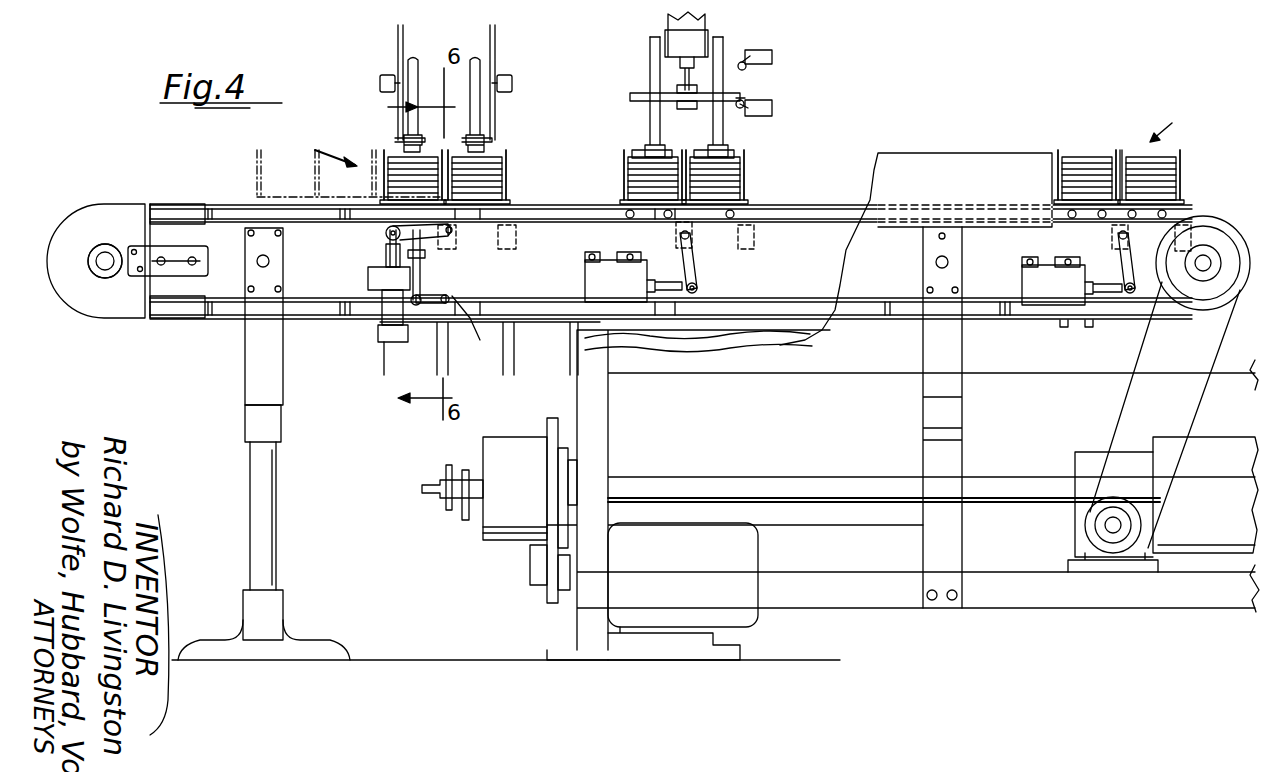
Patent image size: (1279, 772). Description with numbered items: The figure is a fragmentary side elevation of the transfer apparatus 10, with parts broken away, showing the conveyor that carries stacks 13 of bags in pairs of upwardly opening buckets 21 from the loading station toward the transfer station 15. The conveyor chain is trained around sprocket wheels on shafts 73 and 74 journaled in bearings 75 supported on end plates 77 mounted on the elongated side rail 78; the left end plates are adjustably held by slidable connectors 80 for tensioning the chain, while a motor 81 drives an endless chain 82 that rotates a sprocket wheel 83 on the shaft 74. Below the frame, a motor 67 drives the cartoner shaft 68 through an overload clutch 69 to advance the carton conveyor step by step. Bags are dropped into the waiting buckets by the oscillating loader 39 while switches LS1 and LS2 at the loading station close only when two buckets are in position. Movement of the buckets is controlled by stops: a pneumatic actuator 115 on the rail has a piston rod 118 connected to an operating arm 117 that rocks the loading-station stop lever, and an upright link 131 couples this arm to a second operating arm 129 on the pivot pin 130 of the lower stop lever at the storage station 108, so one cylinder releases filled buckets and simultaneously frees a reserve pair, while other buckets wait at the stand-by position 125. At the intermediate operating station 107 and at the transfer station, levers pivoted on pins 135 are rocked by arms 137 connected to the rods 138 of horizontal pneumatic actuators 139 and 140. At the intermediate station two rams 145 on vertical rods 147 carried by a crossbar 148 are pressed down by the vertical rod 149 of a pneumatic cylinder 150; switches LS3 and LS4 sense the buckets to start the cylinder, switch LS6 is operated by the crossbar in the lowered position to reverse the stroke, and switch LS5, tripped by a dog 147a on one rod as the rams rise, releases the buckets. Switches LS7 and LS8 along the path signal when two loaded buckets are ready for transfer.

The transfer apparatus 10 is at (321, 151).
The stacks 13 is at (630, 186).
The transfer station 15 is at (1172, 127).
The buckets 21 is at (612, 166).
The oscillating loader 39 is at (390, 72).
The motor 67 is at (745, 548).
The cartoner shaft 68 is at (800, 495).
The overload clutch 69 is at (505, 533).
The shaft 73 is at (105, 261).
The shaft 74 is at (1200, 272).
The bearings 75 is at (110, 278).
The end plates 77 is at (118, 322).
The side rail 78 is at (195, 290).
The slidable connectors 80 is at (185, 250).
The motor 81 is at (1232, 440).
The endless chain 82 is at (1195, 398).
The sprocket wheel 83 is at (1225, 245).
The intermediate operating station 107 is at (624, 143).
The storage station 108 is at (384, 367).
The actuator 115 is at (385, 315).
The operating arm 117 is at (386, 228).
The piston rod 118 is at (384, 252).
The stand-by position 125 is at (252, 165).
The second operating arm 129 is at (450, 290).
The pivot pin 130 is at (474, 322).
The upright link 131 is at (422, 272).
The pin 135 is at (700, 238).
The arm 137 is at (708, 258).
The rod 138 is at (680, 284).
The pneumatic actuator 139 is at (608, 248).
The pneumatic actuator 140 is at (1060, 295).
The rams 145 is at (638, 155).
The vertical rods 147 is at (660, 122).
The dog 147a is at (740, 82).
The crossbar 148 is at (646, 93).
The vertical rod 149 is at (680, 70).
The pneumatic cylinder 150 is at (668, 28).
The limit switch LS1 is at (456, 240).
The limit switch LS2 is at (516, 240).
The limit switch LS3 is at (692, 232).
The limit switch LS4 is at (754, 235).
The switch LS5 is at (772, 52).
The switch LS6 is at (772, 108).
The limit switch LS7 is at (1112, 245).
The limit switch LS8 is at (1191, 228).